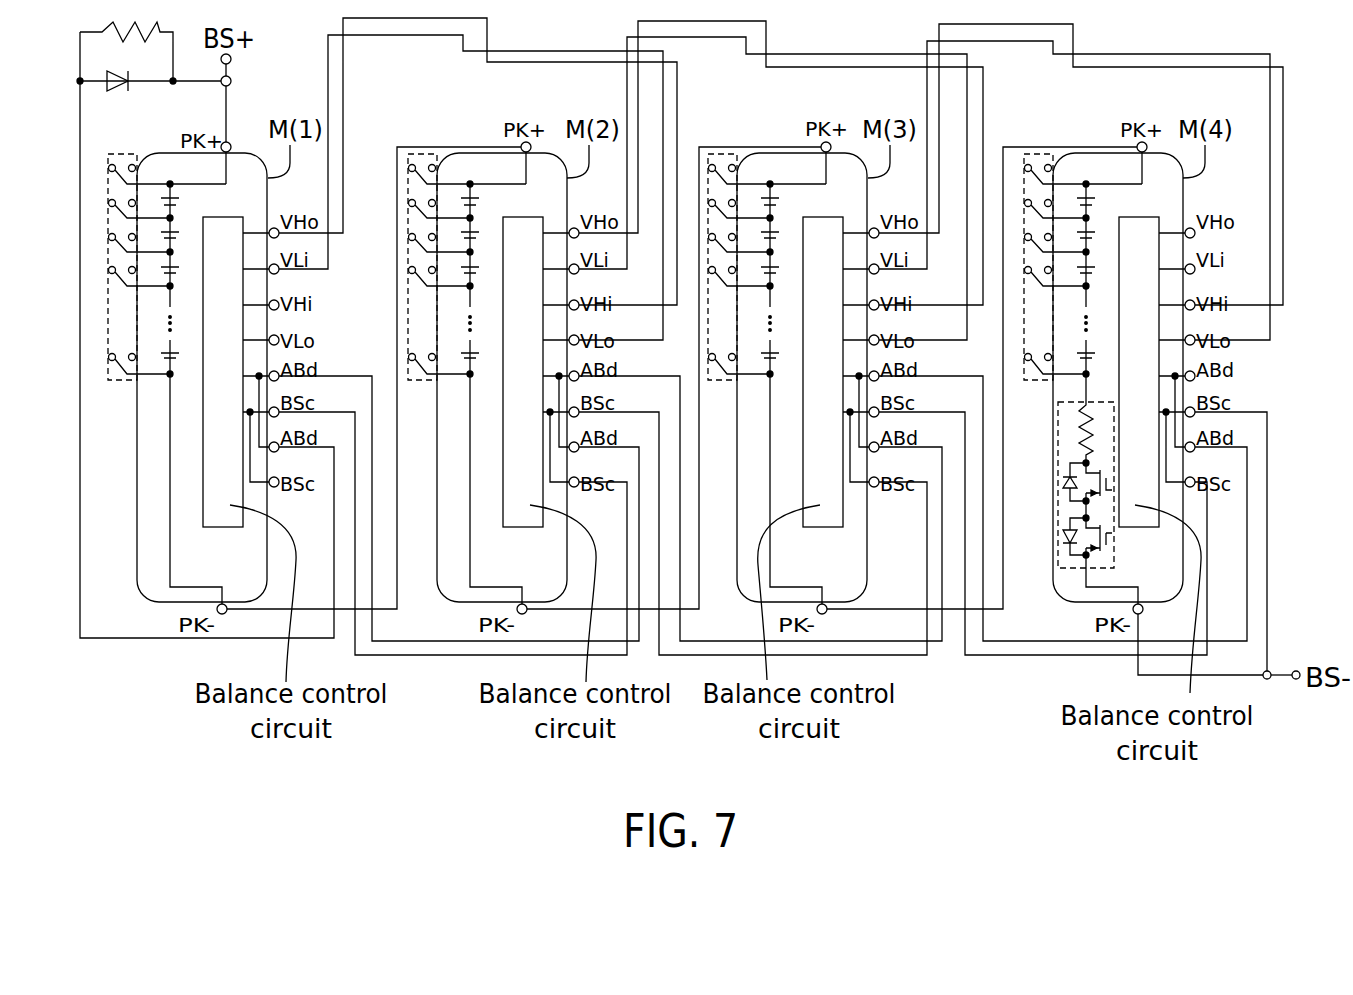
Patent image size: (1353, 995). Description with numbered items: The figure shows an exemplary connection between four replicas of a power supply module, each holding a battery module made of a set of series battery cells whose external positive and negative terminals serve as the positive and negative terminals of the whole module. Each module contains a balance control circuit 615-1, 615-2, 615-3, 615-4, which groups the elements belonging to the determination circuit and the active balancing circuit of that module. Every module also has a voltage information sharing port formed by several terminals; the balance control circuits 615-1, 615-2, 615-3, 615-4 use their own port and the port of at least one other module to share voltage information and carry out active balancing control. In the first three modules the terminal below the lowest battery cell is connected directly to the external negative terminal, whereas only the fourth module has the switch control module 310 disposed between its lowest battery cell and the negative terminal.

The balance control circuit 615-1 is at (223, 528).
The balance control circuit 615-2 is at (523, 528).
The balance control circuit 615-3 is at (823, 528).
The balance control circuit 615-4 is at (1138, 528).
The switch control module 310 is at (1057, 516).